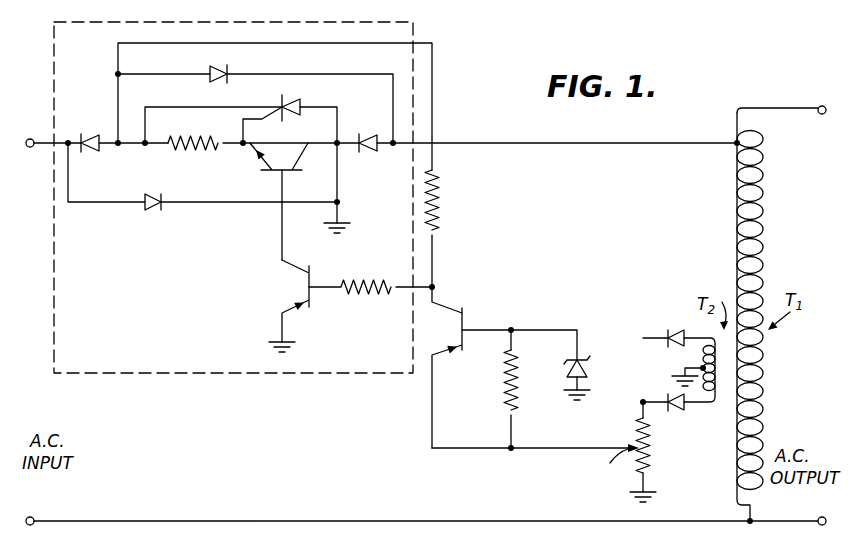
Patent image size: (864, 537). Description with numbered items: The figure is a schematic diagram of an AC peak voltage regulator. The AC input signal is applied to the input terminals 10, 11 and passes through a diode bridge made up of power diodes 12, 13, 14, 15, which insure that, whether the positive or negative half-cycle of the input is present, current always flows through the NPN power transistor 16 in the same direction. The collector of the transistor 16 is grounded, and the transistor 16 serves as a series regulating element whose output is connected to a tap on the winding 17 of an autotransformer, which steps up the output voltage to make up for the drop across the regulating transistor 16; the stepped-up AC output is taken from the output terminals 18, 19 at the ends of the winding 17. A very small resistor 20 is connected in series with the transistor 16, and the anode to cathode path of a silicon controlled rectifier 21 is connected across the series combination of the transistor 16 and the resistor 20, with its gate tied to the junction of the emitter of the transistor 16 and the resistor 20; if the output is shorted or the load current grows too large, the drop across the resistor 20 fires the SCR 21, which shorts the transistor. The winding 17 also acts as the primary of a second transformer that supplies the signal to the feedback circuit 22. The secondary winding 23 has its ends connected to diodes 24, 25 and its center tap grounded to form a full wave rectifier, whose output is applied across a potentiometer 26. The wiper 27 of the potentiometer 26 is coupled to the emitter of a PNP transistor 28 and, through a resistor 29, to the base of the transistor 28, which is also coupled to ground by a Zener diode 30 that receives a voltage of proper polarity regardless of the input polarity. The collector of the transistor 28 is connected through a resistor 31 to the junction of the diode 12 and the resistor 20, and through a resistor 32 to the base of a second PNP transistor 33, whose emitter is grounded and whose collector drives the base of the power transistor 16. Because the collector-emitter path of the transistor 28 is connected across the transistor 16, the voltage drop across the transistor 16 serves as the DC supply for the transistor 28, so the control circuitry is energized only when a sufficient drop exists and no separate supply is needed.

The input terminal 10 is at (29, 148).
The input terminal 11 is at (36, 514).
The power diode 12 is at (97, 132).
The power diode 13 is at (150, 214).
The power diode 14 is at (218, 67).
The power diode 15 is at (364, 153).
The NPN power transistor 16 is at (273, 172).
The winding 17 is at (758, 211).
The A.C. output terminal 18 is at (819, 104).
The A.C. output terminal 19 is at (818, 524).
The resistor 20 is at (220, 148).
The silicon controlled rectifier 21 is at (289, 98).
The feedback circuit 22 is at (506, 435).
The secondary winding 23 is at (720, 394).
The diode 24 is at (684, 330).
The diode 25 is at (673, 411).
The potentiometer 26 is at (646, 484).
The wiper 27 is at (612, 461).
The PNP transistor 28 is at (465, 312).
The resistor 29 is at (508, 386).
The Zener diode 30 is at (588, 360).
The resistor 31 is at (440, 203).
The resistor 32 is at (397, 257).
The second PNP transistor 33 is at (311, 281).